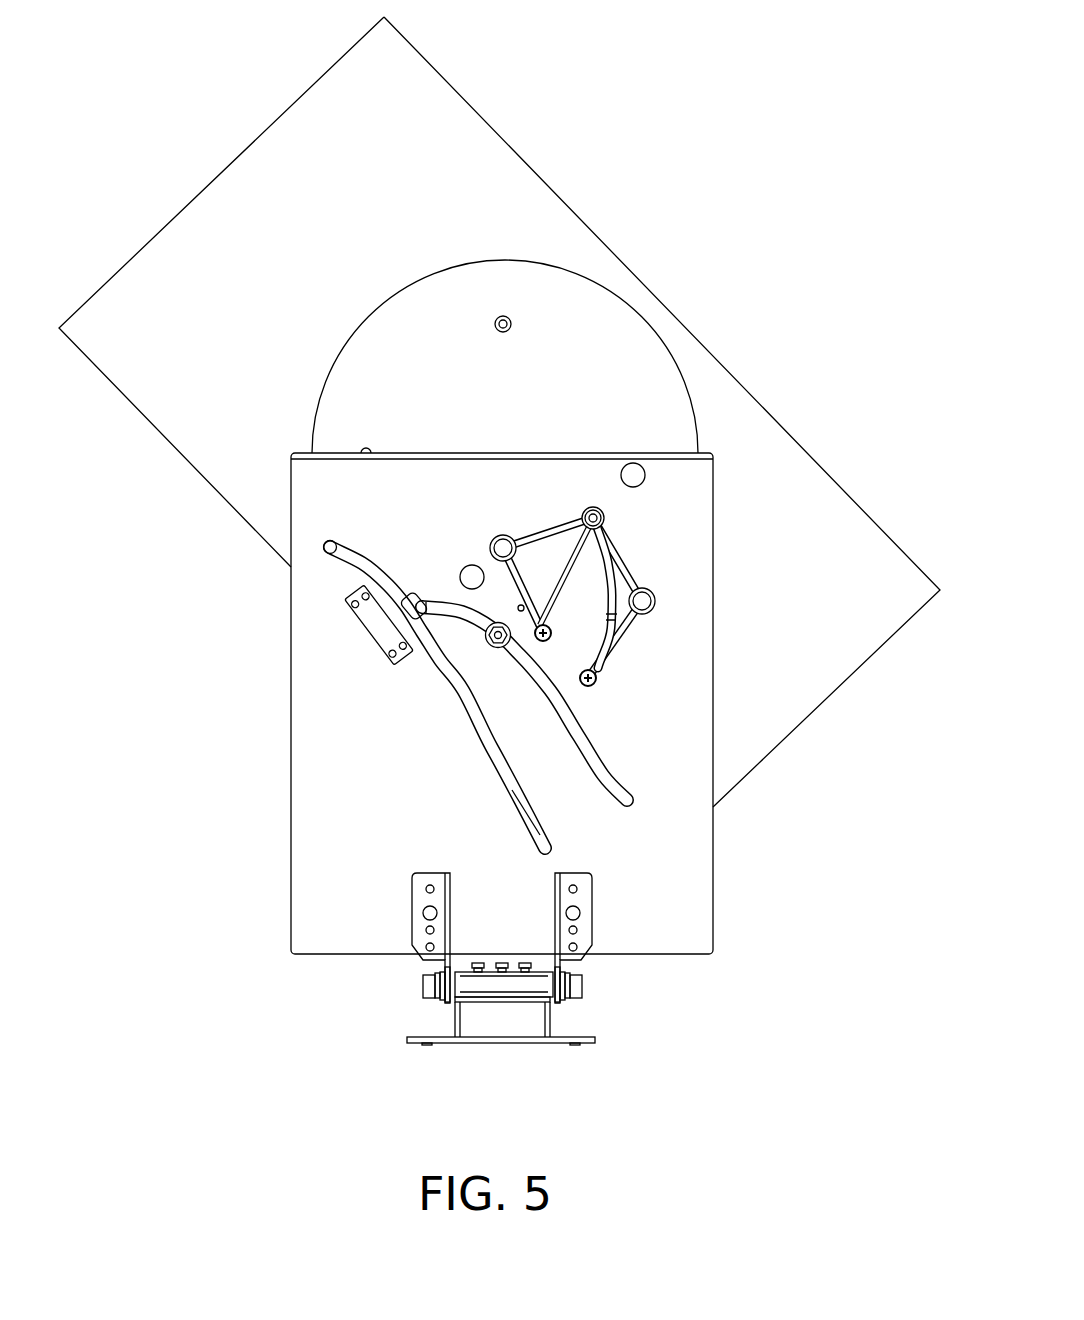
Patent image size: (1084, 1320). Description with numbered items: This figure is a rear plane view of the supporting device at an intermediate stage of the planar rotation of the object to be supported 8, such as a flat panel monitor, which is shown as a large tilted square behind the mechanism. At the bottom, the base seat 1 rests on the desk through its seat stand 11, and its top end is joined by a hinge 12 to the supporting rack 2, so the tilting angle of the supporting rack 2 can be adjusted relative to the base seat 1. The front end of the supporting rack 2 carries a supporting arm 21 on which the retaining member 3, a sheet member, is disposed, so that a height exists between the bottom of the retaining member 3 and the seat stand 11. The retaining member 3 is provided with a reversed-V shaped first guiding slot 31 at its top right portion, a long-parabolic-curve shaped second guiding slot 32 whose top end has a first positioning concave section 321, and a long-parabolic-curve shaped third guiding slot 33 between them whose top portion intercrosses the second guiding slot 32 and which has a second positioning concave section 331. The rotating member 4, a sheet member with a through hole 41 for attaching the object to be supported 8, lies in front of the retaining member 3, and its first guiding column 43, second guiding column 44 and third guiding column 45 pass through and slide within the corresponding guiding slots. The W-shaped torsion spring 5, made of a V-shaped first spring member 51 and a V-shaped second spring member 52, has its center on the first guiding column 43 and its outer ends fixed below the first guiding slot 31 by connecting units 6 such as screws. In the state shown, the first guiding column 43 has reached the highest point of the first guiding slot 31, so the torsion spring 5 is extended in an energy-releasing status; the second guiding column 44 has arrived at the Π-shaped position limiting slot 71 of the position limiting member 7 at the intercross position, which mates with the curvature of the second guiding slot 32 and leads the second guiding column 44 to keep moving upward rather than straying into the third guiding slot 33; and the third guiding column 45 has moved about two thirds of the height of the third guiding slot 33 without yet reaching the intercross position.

The base seat 1 is at (501, 1060).
The seat stand 11 is at (560, 1043).
The hinge 12 is at (566, 997).
The supporting rack 2 is at (447, 923).
The supporting arm 21 is at (586, 921).
The retaining member 3 is at (313, 763).
The first guiding slot 31 is at (609, 580).
The second guiding slot 32 is at (377, 702).
The first positioning concave section 321 is at (323, 550).
The third guiding slot 33 is at (505, 701).
The second positioning concave section 331 is at (397, 623).
The rotating member 4 is at (589, 332).
The through hole 41 is at (508, 318).
The first guiding column 43 is at (595, 507).
The second guiding column 44 is at (419, 600).
The third guiding column 45 is at (498, 647).
The torsion spring 5 is at (707, 478).
The first spring member 51 is at (632, 628).
The second spring member 52 is at (548, 550).
The connecting unit 6 is at (600, 680).
The position limiting member 7 is at (272, 673).
The position limiting slot 71 is at (385, 641).
The object to be supported 8 is at (473, 140).